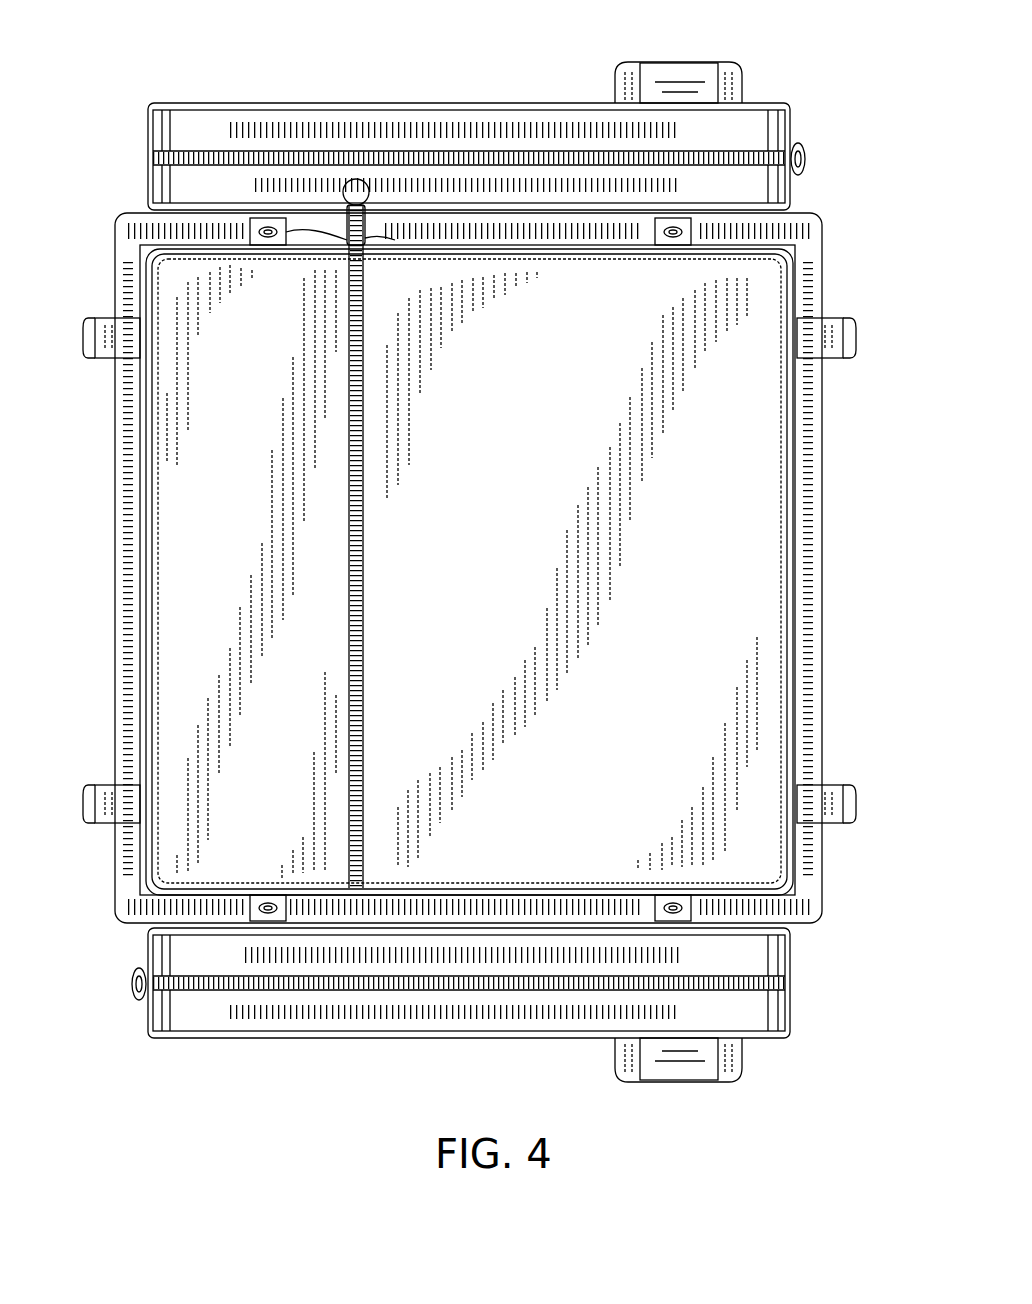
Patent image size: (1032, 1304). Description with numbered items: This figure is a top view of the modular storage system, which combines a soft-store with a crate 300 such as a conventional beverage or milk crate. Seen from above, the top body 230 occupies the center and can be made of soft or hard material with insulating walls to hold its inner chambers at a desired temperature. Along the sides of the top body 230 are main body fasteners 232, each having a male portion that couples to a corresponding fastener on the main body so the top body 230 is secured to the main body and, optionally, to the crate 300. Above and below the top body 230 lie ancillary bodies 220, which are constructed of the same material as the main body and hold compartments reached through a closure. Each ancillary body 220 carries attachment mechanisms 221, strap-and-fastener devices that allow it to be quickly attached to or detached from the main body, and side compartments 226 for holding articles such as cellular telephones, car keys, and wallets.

The crate 300 is at (812, 702).
The ancillary body 220 is at (458, 122).
The attachment mechanism 221 is at (270, 226).
The side compartment 226 is at (685, 82).
The top body 230 is at (658, 585).
The main body fastener 232 is at (122, 330).